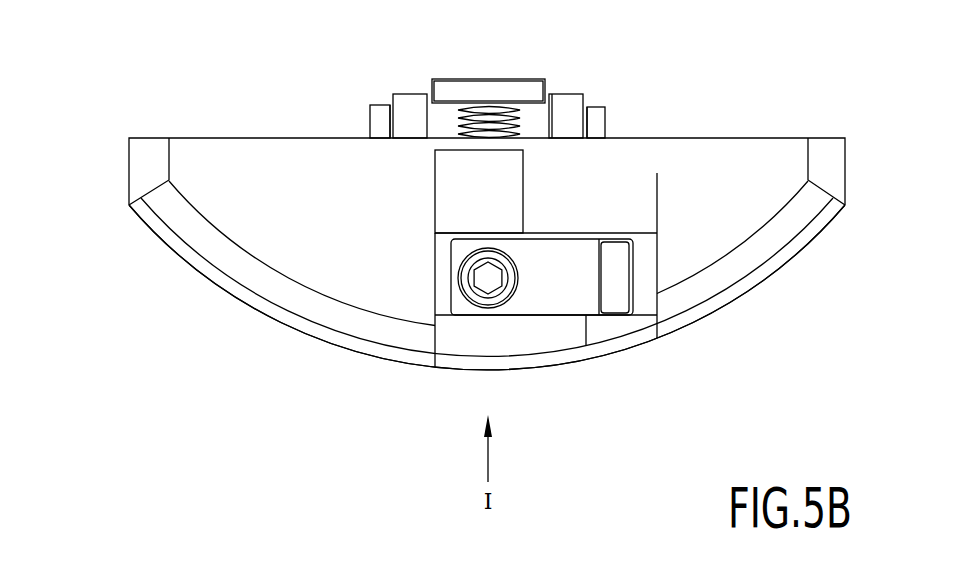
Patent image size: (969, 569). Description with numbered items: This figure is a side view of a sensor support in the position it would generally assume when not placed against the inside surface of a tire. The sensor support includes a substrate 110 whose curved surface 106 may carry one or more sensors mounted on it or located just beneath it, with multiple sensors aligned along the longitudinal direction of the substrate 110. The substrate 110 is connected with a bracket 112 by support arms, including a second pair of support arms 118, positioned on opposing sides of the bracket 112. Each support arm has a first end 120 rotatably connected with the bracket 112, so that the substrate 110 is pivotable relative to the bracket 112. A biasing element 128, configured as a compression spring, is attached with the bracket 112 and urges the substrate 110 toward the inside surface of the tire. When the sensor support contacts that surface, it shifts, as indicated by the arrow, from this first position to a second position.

The surface 106 is at (317, 340).
The substrate 110 is at (214, 265).
The bracket 112 is at (488, 85).
The second pair of support arms 118 is at (405, 115).
The first end 120 is at (405, 92).
The biasing element 128 is at (458, 127).